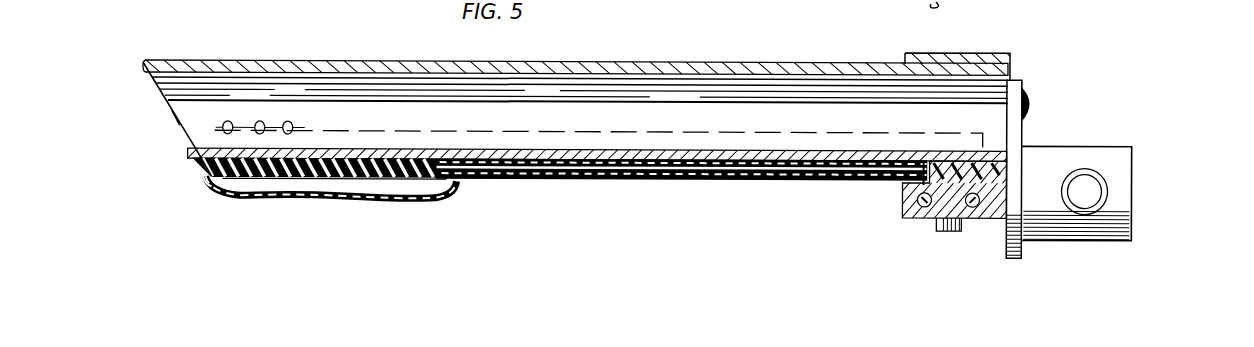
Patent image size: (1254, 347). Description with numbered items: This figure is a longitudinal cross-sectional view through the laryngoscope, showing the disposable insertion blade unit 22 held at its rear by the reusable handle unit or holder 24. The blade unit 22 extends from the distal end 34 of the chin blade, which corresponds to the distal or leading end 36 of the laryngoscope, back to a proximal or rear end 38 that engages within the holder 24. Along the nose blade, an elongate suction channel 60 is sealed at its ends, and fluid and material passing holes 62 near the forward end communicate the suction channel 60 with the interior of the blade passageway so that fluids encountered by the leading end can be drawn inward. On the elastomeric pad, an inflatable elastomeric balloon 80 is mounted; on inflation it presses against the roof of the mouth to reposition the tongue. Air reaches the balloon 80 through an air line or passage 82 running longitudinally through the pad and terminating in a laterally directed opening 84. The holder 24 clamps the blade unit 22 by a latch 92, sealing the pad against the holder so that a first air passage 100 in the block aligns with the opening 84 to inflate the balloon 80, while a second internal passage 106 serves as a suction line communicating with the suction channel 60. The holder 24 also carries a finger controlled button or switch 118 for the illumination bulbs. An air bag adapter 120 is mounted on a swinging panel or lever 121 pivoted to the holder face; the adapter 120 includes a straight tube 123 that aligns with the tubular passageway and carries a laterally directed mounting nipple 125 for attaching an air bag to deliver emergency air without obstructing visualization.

The disposable insertion blade unit 22 is at (652, 63).
The handle unit or holder 24 is at (911, 214).
The distal end of the blade 34 is at (178, 127).
The distal or leading end of the laryngoscope 36 is at (159, 113).
The proximal or rear end 38 is at (995, 115).
The suction channel 60 is at (386, 140).
The fluid and material passing holes 62 is at (293, 125).
The inflatable elastomeric balloon 80 is at (404, 186).
The air line or passage 82 is at (526, 172).
The laterally directed opening 84 is at (903, 185).
The latch 92 is at (992, 56).
The first air passage 100 is at (919, 199).
The second internal passage 106 is at (975, 206).
The finger controlled button or switch 118 is at (950, 229).
The air bag adapter 120 is at (1133, 186).
The swinging panel or lever 121 is at (1015, 128).
The straight tube 123 is at (1106, 153).
The laterally directed mounting nipple 125 is at (1105, 200).